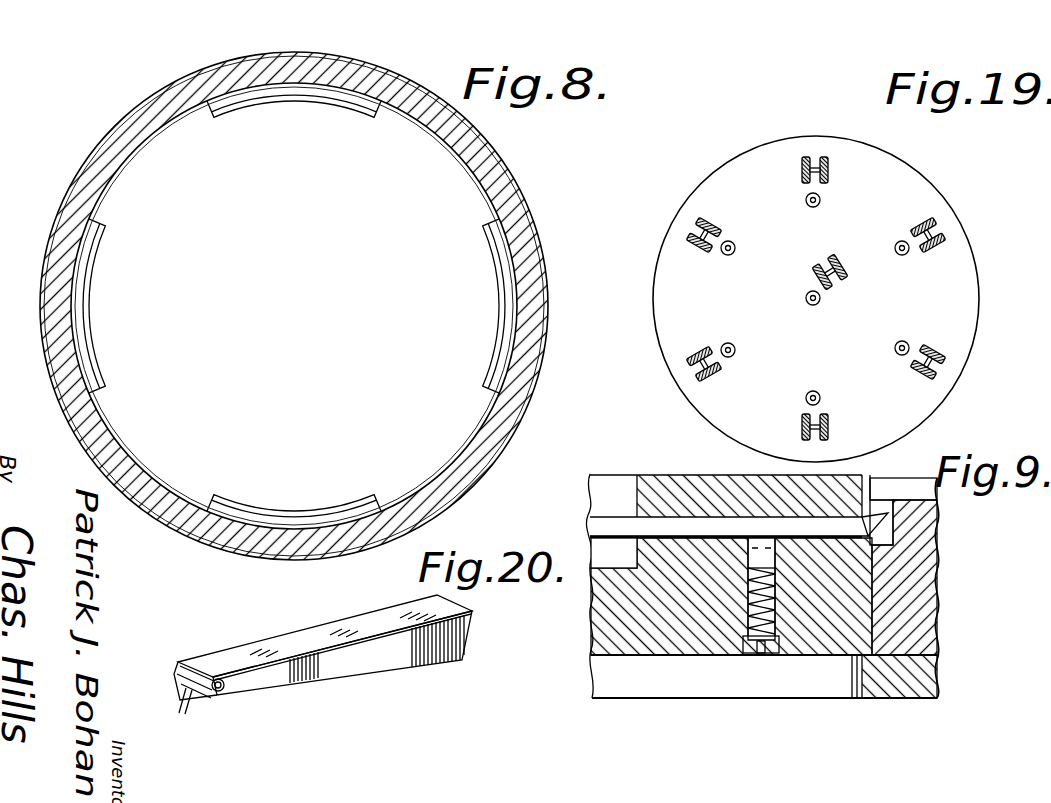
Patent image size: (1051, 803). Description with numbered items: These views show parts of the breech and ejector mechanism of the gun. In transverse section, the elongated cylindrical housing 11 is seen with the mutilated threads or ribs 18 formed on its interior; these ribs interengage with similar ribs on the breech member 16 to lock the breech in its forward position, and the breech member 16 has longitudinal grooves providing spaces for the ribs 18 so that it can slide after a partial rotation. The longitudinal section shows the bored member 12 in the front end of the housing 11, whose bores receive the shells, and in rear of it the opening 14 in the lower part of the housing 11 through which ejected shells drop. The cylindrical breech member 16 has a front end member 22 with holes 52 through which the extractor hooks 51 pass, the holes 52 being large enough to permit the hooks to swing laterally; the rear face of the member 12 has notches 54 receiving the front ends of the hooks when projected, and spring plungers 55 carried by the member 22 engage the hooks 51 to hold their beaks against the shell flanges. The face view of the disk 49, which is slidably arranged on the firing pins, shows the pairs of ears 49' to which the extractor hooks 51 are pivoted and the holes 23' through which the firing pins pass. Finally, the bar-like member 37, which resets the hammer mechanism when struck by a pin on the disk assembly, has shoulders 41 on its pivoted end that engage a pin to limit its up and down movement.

In FIG. 8, the housing 11 is at (532, 234).
In FIG. 9, the housing 11 is at (908, 692).
In FIG. 8, the mutilated threads or ribs 18 is at (272, 100).
In FIG. 19, the disk 49 is at (816, 287).
In FIG. 19, the pairs of ears 49' is at (850, 311).
In FIG. 19, the holes 23' is at (813, 299).
In FIG. 9, the front end member 22 is at (717, 508).
In FIG. 9, the extractor hooks 51 is at (692, 520).
In FIG. 9, the holes 52 is at (874, 506).
In FIG. 9, the notches 54 is at (893, 530).
In FIG. 9, the bored member 12 is at (934, 608).
In FIG. 9, the breech member 16 is at (600, 634).
In FIG. 9, the spring plungers 55 is at (748, 556).
In FIG. 9, the opening 14 is at (628, 690).
In FIG. 20, the bar-like member 37 is at (384, 660).
In FIG. 20, the shoulders 41 is at (187, 702).